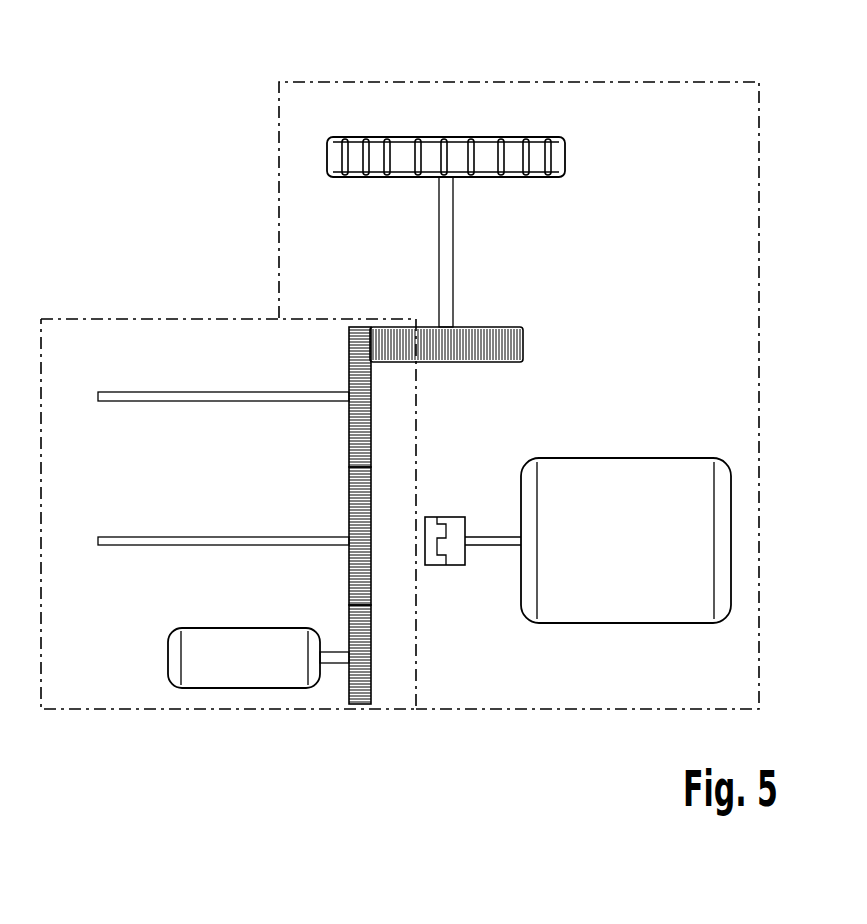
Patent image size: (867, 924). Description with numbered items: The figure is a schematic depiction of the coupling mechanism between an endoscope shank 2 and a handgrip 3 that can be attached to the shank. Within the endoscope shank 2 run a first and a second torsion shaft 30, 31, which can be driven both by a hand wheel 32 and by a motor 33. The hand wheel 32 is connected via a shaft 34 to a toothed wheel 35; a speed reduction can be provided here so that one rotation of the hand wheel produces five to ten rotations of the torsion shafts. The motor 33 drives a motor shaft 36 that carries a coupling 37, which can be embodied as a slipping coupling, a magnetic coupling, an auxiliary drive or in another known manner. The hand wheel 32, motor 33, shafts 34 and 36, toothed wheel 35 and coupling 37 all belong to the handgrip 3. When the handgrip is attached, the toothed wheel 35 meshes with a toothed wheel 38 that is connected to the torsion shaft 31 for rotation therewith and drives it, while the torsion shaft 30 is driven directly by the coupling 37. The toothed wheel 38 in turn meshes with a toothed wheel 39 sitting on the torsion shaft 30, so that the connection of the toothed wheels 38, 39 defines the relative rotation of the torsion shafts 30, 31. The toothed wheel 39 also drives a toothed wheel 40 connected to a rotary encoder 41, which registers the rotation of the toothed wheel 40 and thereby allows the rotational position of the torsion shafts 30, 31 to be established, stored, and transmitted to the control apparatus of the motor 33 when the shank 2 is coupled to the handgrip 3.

The endoscope shank 2 is at (118, 352).
The handgrip 3 is at (687, 100).
The first torsion shaft 30 is at (171, 540).
The second torsion shaft 31 is at (170, 396).
The hand wheel 32 is at (487, 143).
The motor 33 is at (618, 470).
The shaft 34 is at (445, 256).
The toothed wheel 35 is at (517, 327).
The motor shaft 36 is at (492, 532).
The coupling 37 is at (456, 567).
The toothed wheel 38 is at (373, 388).
The toothed wheel 39 is at (352, 578).
The toothed wheel 40 is at (360, 696).
The rotary encoder 41 is at (272, 690).